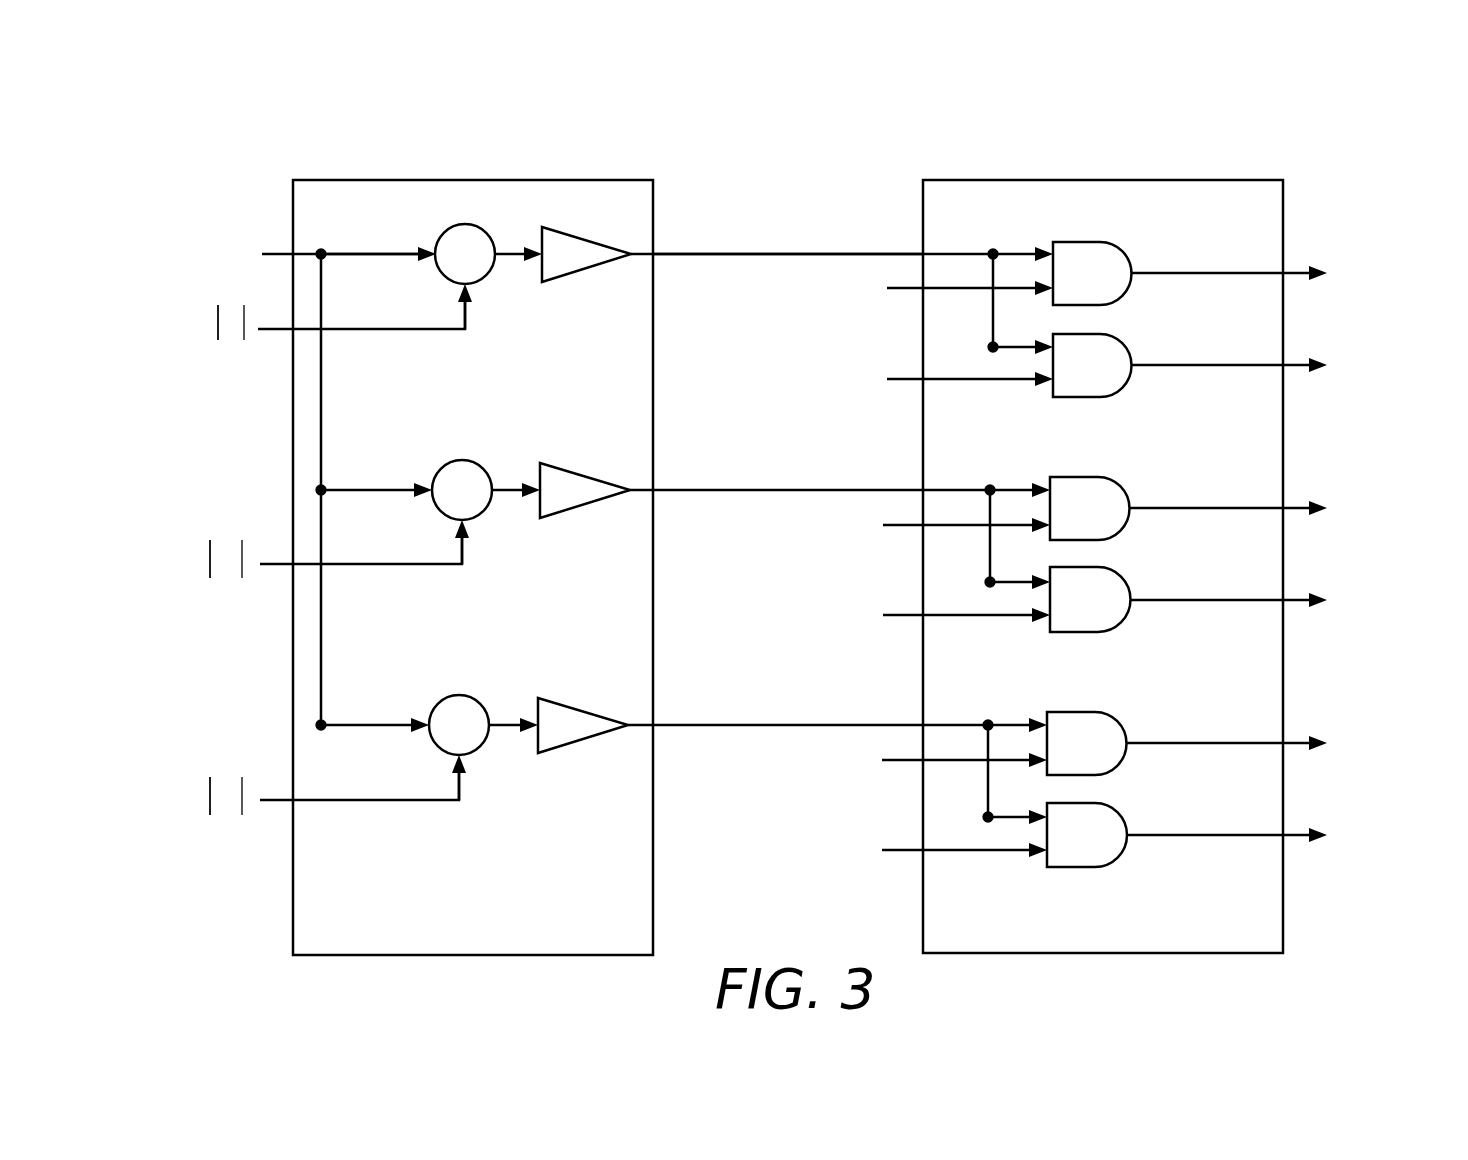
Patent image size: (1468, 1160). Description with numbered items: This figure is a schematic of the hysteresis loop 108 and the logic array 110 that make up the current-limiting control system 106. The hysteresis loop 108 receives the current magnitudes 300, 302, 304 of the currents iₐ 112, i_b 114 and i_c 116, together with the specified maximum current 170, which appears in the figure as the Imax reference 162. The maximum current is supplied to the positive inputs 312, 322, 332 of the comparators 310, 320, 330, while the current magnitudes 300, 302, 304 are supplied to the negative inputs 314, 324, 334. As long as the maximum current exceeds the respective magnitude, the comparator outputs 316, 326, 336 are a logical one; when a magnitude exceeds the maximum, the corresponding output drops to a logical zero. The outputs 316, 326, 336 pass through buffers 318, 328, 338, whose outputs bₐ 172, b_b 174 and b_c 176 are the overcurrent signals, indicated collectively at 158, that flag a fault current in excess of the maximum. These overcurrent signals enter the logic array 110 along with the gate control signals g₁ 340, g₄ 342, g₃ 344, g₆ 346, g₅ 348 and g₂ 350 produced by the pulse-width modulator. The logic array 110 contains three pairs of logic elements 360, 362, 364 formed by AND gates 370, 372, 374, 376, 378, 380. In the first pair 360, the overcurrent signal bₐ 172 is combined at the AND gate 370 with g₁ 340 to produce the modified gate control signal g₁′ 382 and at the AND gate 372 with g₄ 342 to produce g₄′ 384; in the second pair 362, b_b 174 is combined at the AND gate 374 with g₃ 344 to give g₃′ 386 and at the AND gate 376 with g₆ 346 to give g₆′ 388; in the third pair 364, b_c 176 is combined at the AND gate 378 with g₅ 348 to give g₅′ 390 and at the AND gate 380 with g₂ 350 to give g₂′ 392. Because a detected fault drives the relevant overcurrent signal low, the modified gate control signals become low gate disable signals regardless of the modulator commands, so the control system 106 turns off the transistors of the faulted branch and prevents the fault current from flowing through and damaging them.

The current-limiting control system 106 is at (195, 150).
The hysteresis loop 108 is at (473, 567).
The logic array 110 is at (1103, 566).
The current i_a 112 is at (225, 355).
The current i_b 114 is at (223, 590).
The current i_c 116 is at (221, 826).
The hysteresis output signals 158 is at (850, 225).
The maximum current reference Imax 162 is at (224, 232).
The specified maximum current 170 is at (1377, 225).
The overcurrent signal b_a 172 is at (778, 223).
The overcurrent signal b_b 174 is at (775, 458).
The overcurrent signal b_c 176 is at (770, 684).
The current magnitude 300 is at (206, 318).
The current magnitude 302 is at (208, 548).
The current magnitude 304 is at (212, 784).
The comparator 310 is at (456, 264).
The positive input 312 is at (440, 234).
The negative input 314 is at (484, 282).
The comparator output 316 is at (540, 234).
The buffer 318 is at (586, 254).
The comparator 320 is at (451, 499).
The positive input 322 is at (442, 468).
The negative input 324 is at (482, 514).
The comparator output 326 is at (538, 468).
The buffer 328 is at (585, 490).
The comparator 330 is at (448, 734).
The positive input 332 is at (440, 702).
The negative input 334 is at (480, 750).
The comparator output 336 is at (536, 703).
The buffer 338 is at (583, 725).
The gate control signal g_1 340 is at (852, 300).
The gate control signal g_4 342 is at (853, 392).
The gate control signal g_3 344 is at (850, 533).
The gate control signal g_6 346 is at (848, 625).
The gate control signal g_5 348 is at (848, 770).
The gate control signal g_2 350 is at (848, 860).
The first pair of logic elements 360 is at (1161, 304).
The second pair of logic elements 362 is at (1161, 539).
The third pair of logic elements 364 is at (1161, 770).
The AND gate 370 is at (1092, 273).
The AND gate 372 is at (1092, 365).
The AND gate 374 is at (1090, 508).
The AND gate 376 is at (1090, 599).
The AND gate 378 is at (1087, 743).
The AND gate 380 is at (1087, 835).
The modified gate control signal g_1' 382 is at (1366, 288).
The modified gate control signal g_4' 384 is at (1363, 378).
The modified gate control signal g_3' 386 is at (1368, 523).
The modified gate control signal g_6' 388 is at (1368, 616).
The modified gate control signal g_5' 390 is at (1371, 758).
The modified gate control signal g_2' 392 is at (1371, 850).